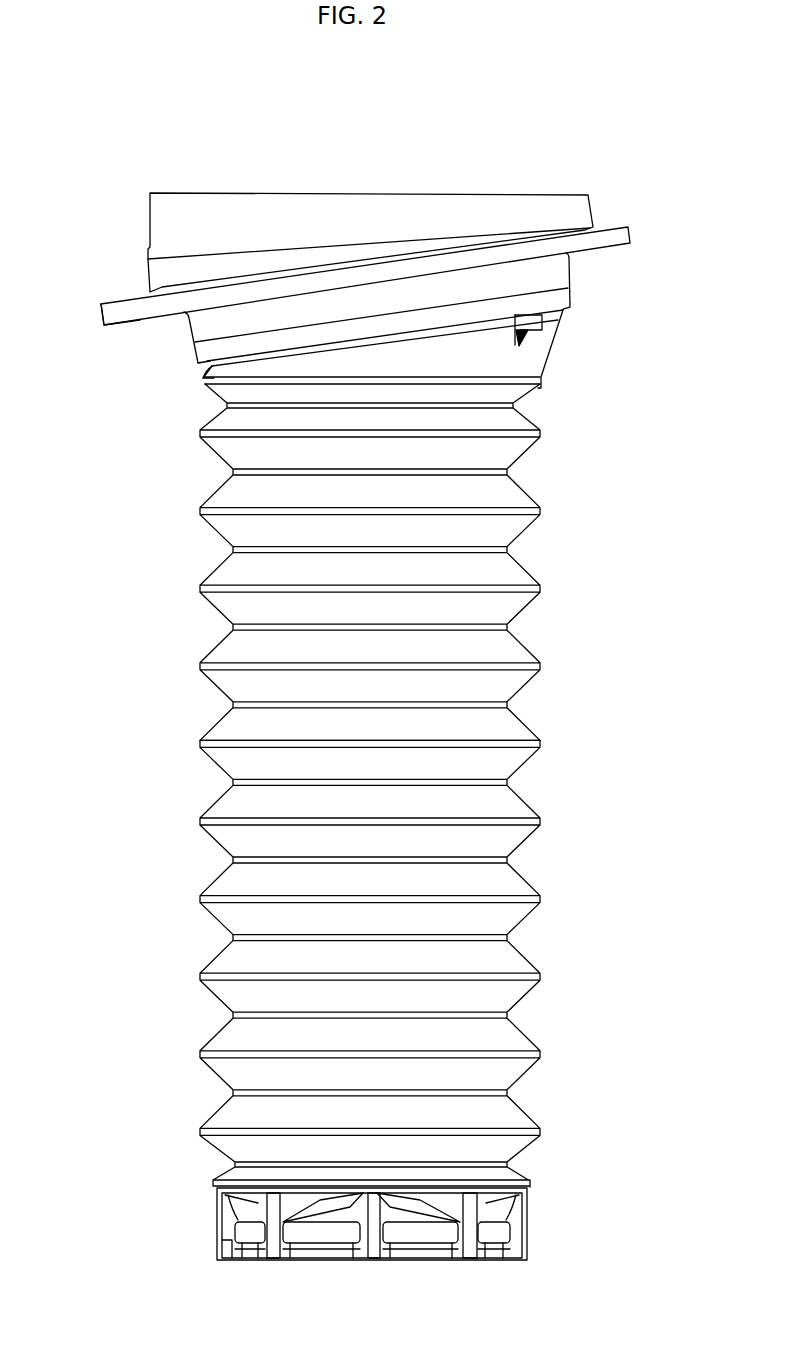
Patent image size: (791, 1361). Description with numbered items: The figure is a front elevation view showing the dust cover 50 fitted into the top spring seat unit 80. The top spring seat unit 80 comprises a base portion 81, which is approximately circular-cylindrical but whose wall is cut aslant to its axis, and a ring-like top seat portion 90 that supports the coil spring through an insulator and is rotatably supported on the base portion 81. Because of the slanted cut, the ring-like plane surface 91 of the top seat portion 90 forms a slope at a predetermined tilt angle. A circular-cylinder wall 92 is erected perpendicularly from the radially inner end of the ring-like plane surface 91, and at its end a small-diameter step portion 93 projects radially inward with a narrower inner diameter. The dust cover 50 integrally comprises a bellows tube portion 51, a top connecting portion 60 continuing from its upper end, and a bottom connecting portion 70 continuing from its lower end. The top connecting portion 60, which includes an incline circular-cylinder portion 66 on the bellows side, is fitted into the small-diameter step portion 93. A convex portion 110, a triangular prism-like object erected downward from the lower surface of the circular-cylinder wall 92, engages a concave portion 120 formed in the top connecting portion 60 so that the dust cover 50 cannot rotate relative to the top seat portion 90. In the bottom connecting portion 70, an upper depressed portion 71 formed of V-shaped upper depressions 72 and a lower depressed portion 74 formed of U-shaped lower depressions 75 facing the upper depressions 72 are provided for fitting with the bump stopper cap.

The dust cover 50 is at (570, 650).
The bellows tube portion 51 is at (540, 728).
The top connecting portion 60 is at (547, 370).
The incline circular-cylinder portion 66 is at (500, 362).
The bottom connecting portion 70 is at (530, 1243).
The upper depressed portion 71 is at (240, 1200).
The upper depressions 72 is at (330, 1212).
The lower depressed portion 74 is at (222, 1245).
The lower depressions 75 is at (330, 1250).
The top spring seat unit 80 is at (128, 233).
The base portion 81 is at (497, 192).
The top seat portion 90 is at (612, 226).
The ring-like plane surface 91 is at (140, 320).
The circular-cylinder wall 92 is at (572, 288).
The small-diameter step portion 93 is at (205, 385).
The convex portion 110 is at (530, 323).
The concave portion 120 is at (523, 333).